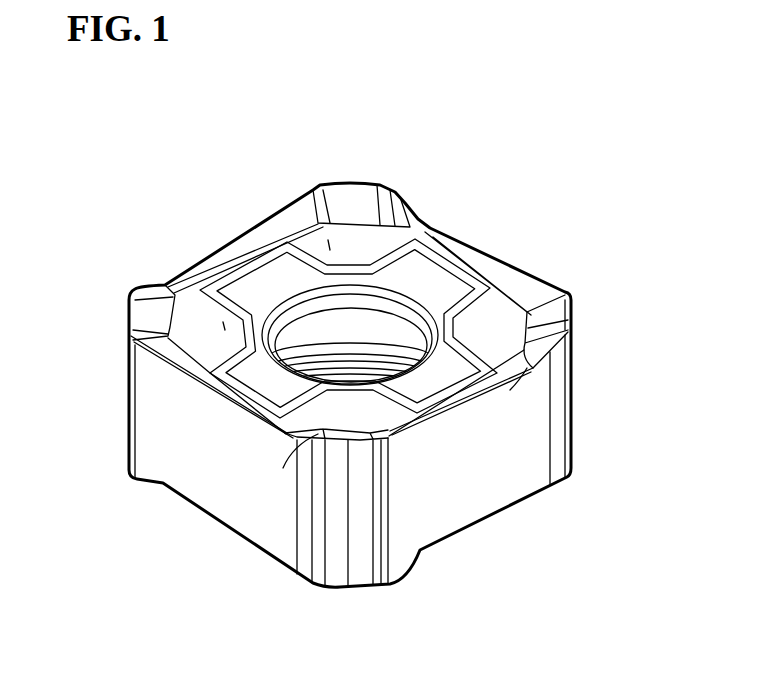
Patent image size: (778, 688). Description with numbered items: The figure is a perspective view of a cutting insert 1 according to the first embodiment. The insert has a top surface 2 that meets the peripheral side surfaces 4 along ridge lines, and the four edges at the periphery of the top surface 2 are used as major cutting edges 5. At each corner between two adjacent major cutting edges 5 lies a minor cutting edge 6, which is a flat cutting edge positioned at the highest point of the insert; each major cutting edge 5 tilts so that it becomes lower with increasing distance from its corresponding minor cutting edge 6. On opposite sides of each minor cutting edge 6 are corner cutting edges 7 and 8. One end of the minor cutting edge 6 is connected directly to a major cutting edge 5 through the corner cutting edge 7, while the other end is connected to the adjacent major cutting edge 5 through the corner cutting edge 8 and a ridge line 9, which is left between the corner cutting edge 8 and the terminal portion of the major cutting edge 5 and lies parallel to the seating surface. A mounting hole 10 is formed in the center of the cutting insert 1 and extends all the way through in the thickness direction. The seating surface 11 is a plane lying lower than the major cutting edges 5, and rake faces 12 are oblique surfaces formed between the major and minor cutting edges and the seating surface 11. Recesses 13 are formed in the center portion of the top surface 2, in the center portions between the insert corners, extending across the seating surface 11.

The cutting insert 1 is at (402, 170).
The top surface 2 is at (410, 227).
The side surfaces 4 is at (523, 465).
The major cutting edges 5 is at (533, 280).
The minor cutting edges 6 is at (572, 314).
The corner cutting edge 7 is at (377, 440).
The corner cutting edge 8 is at (298, 447).
The ridge line 9 is at (527, 368).
The mounting hole 10 is at (304, 336).
The seating surface 11 is at (328, 240).
The rake faces 12 is at (345, 192).
The recesses 13 is at (262, 414).